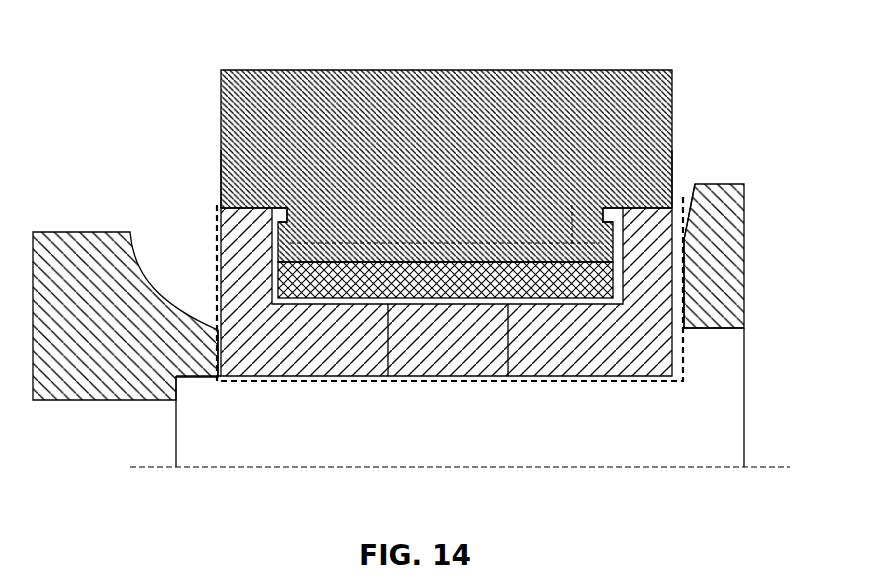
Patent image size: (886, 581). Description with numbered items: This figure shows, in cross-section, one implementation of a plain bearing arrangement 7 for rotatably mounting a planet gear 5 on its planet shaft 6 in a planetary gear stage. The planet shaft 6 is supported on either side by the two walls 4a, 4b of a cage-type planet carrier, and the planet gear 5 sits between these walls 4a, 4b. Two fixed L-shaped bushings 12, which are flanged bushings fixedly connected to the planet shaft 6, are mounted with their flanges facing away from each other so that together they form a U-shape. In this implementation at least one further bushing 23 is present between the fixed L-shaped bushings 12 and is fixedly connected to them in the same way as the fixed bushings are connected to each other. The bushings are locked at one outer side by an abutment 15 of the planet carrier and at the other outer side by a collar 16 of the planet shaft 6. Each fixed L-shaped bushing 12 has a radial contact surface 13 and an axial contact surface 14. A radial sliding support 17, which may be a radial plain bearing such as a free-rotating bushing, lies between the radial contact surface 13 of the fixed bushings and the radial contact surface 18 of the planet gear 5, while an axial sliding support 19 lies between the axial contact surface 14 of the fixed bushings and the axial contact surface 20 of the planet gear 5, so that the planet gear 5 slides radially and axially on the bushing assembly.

The wall of the planet carrier 4a is at (72, 245).
The wall of the planet carrier 4b is at (720, 198).
The planet gear 5 is at (522, 95).
The planet shaft 6 is at (703, 411).
The plain bearing arrangement 7 is at (688, 248).
The fixed L-shaped bushing 12 is at (233, 258).
The radial contact surface of the fixed L-shaped bushing 13 is at (536, 306).
The axial contact surface of the fixed L-shaped bushing 14 is at (268, 222).
The abutment of the planet carrier 15 is at (181, 337).
The collar of the planet shaft 16 is at (705, 339).
The radial sliding support 17 is at (573, 276).
The radial contact surface of the planet gear 18 is at (452, 250).
The axial sliding support 19 is at (222, 182).
The axial contact surface of the planet gear 20 is at (382, 248).
The further bushing 23 is at (420, 338).